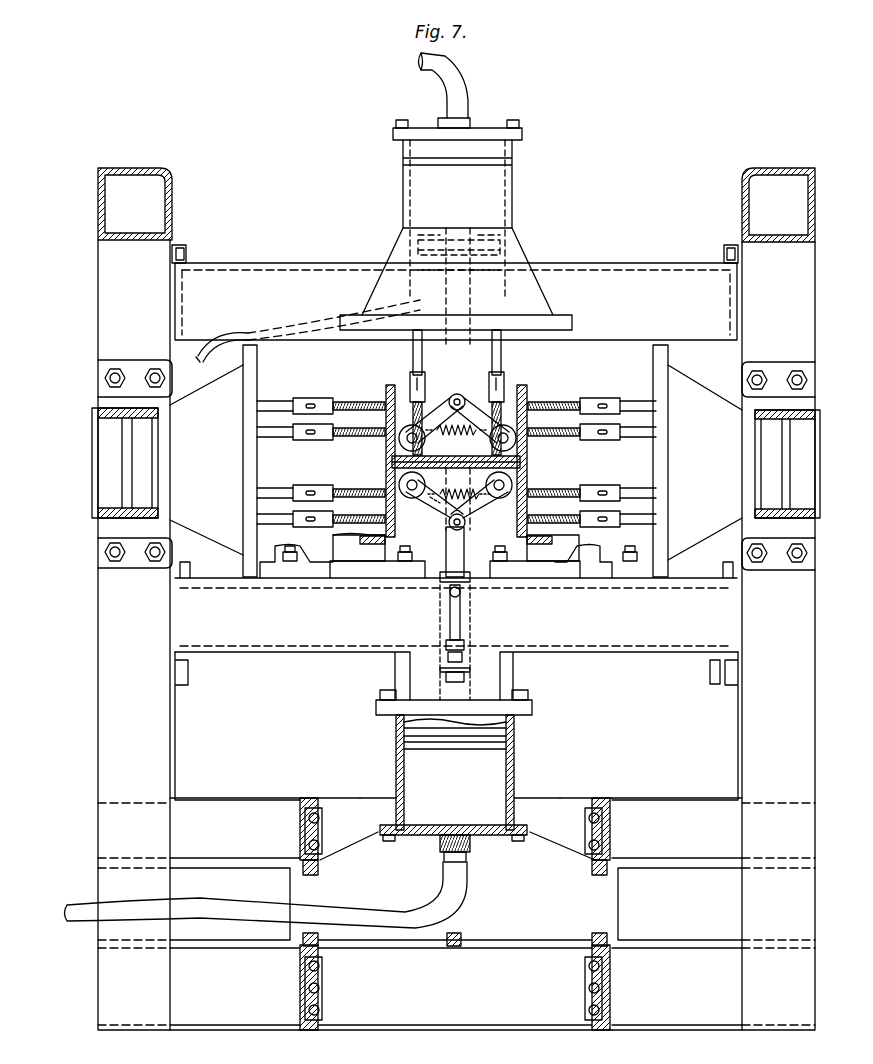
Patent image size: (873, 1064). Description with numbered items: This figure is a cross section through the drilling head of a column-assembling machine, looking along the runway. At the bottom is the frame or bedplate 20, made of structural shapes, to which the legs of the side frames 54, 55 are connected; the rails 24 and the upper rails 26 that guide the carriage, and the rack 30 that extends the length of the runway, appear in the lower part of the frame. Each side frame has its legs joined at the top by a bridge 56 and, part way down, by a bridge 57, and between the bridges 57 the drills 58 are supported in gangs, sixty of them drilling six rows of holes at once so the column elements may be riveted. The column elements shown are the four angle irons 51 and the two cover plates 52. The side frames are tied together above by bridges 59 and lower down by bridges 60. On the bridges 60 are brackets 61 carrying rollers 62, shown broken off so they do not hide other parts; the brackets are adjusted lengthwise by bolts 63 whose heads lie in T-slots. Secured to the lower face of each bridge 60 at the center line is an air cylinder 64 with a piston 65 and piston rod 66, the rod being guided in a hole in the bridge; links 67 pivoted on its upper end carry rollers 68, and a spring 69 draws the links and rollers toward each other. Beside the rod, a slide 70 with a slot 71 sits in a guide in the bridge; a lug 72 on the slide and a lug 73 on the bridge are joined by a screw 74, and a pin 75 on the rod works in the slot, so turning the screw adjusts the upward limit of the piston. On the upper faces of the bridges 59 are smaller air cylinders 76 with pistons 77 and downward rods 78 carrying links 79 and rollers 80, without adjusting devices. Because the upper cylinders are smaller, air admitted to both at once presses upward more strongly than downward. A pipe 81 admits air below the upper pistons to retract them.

The frame or bedplate 20 is at (358, 1032).
The rails 24 is at (318, 940).
The rails 26 is at (318, 870).
The rack 30 is at (452, 933).
The angle irons 51 is at (392, 464).
The cover plates 52 is at (386, 446).
The side frame 54 is at (175, 732).
The side frame 55 is at (738, 742).
The bridge 56 is at (172, 182).
The bridge 57 is at (98, 440).
The drills 58 is at (355, 406).
The bridges 59 is at (288, 280).
The bridges 60 is at (248, 652).
The brackets 61 is at (308, 580).
The rollers 62 is at (362, 548).
The bolts 63 is at (288, 552).
The air cylinder 64 is at (514, 790).
The piston 65 is at (452, 752).
The piston rod 66 is at (464, 536).
The links 67 is at (438, 522).
The rollers 68 is at (418, 482).
The spring 69 is at (438, 506).
The slide 70 is at (452, 574).
The slot 71 is at (450, 613).
The lug 72 is at (465, 645).
The lug 73 is at (444, 672).
The screw 74 is at (448, 655).
The pin 75 is at (450, 591).
The air cylinders 76 is at (512, 148).
The pistons 77 is at (462, 238).
The rods 78 is at (470, 378).
The links 79 is at (425, 420).
The rollers 80 is at (492, 438).
The pipe 81 is at (420, 300).